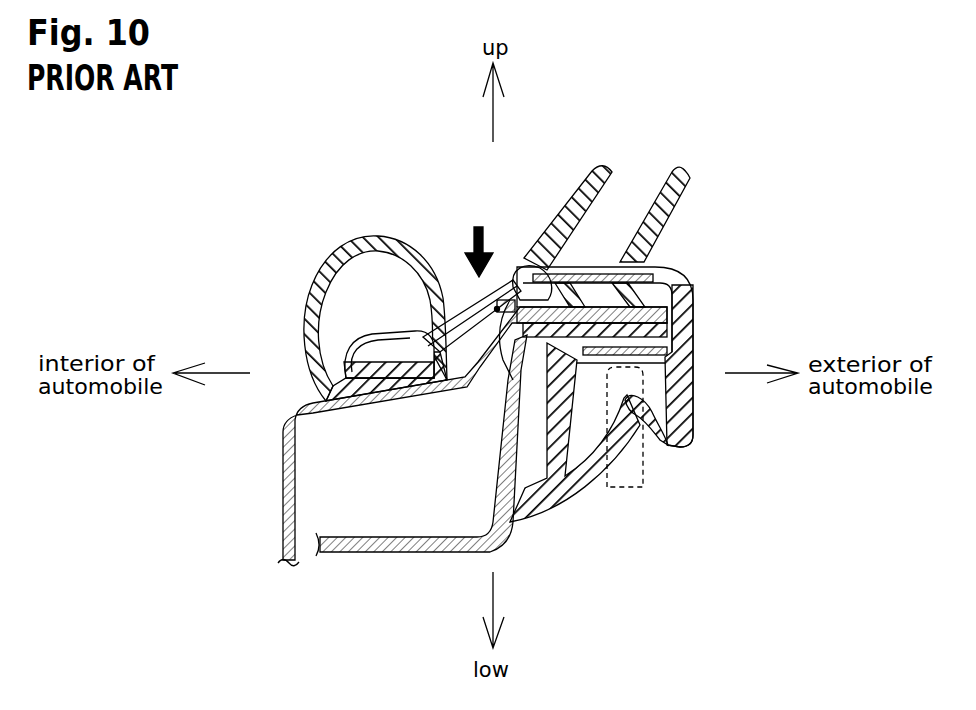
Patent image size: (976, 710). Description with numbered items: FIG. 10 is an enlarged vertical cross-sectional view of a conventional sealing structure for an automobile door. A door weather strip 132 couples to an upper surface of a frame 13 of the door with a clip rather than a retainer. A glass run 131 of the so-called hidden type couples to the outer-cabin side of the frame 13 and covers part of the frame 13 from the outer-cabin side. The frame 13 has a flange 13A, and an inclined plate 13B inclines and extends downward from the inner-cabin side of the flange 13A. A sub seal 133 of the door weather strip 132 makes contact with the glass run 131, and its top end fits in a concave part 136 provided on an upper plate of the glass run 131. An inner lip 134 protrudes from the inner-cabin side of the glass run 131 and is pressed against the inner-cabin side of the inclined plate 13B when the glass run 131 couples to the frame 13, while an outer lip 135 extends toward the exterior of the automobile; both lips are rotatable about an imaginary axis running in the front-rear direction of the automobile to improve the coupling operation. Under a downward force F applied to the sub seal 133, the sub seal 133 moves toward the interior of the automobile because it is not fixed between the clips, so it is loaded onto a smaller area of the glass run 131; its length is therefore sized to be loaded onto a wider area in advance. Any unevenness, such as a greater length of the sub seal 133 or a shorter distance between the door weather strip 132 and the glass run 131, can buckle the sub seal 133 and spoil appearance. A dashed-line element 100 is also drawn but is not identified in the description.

The frame 13 is at (288, 458).
The flange 13A is at (672, 316).
The inclined plate 13B is at (483, 345).
The clip attachment region 100 is at (643, 463).
The glass run 131 is at (712, 457).
The door weather strip 132 is at (282, 311).
The sub seal 133 is at (470, 303).
The inner lip 134 is at (485, 305).
The outer lip 135 is at (563, 268).
The concave part 136 is at (513, 287).
The downward force F is at (473, 243).